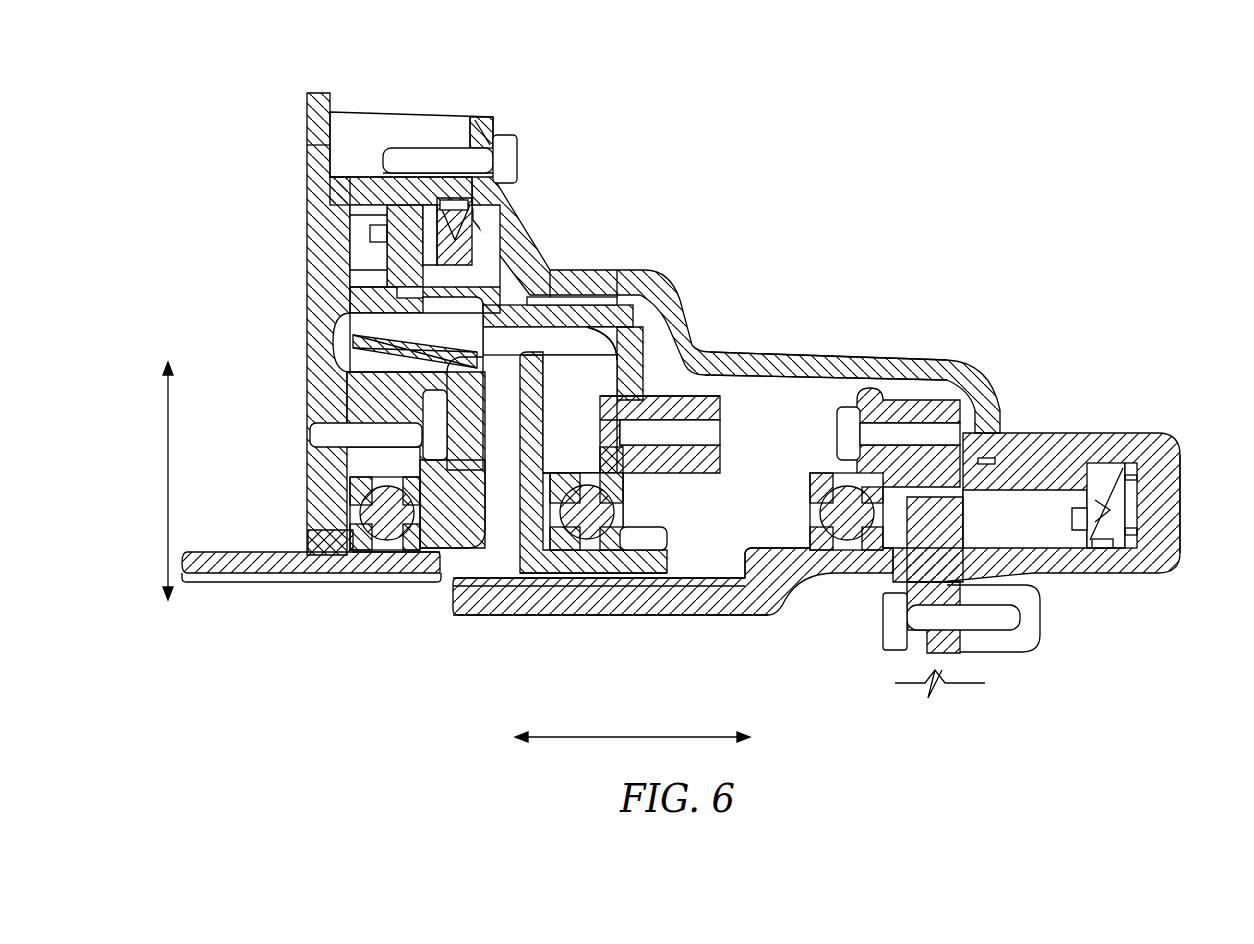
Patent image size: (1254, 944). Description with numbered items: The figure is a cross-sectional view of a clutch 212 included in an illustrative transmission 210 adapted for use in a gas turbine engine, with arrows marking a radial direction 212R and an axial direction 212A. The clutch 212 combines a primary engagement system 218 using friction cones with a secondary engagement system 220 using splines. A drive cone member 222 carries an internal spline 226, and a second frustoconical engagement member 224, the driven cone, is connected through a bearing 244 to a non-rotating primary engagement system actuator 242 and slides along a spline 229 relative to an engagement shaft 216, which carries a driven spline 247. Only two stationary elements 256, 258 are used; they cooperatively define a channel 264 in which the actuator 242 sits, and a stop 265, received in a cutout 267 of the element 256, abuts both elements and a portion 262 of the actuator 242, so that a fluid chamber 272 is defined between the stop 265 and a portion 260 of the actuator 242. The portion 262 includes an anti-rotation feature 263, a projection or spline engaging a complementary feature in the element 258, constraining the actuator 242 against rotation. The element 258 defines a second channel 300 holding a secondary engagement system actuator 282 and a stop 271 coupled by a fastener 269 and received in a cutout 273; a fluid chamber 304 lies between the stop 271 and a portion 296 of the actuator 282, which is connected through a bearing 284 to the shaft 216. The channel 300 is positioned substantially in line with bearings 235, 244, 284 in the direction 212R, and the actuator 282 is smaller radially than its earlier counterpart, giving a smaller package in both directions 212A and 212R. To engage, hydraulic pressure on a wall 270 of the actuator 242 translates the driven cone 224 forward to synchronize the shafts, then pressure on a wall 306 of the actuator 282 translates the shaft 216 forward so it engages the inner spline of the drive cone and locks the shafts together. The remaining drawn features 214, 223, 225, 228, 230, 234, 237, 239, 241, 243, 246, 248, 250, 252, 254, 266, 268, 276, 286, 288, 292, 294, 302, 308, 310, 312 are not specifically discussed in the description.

The transmission 210 is at (1080, 165).
The clutch 212 is at (998, 297).
The radial direction 212R is at (150, 462).
The axial direction 212A is at (605, 737).
The mounting plate 214 is at (371, 576).
The shaft 216 is at (722, 617).
The primary engagement system 218 is at (547, 355).
The secondary engagement system 220 is at (680, 538).
The drive cone member 222 is at (380, 393).
The spring 223 is at (385, 385).
The second frustoconical engagement member 224 is at (552, 452).
The hub shoulder 225 is at (522, 345).
The spline 226 is at (287, 584).
The hub flange 228 is at (684, 577).
The spline 229 is at (550, 582).
The cavity 230 is at (440, 307).
The support flange 234 is at (748, 575).
The bearing 235 is at (352, 492).
The bearing carrier 237 is at (420, 507).
The channel 239 is at (375, 435).
The ball 241 is at (390, 518).
The primary engagement system actuator 242 is at (650, 272).
The passage 243 is at (385, 447).
The bearing 244 is at (637, 490).
The inner ring 246 is at (682, 407).
The driven spline 247 is at (612, 617).
The ring surface 248 is at (643, 398).
The groove 250 is at (680, 437).
The hub wall 252 is at (547, 547).
The second bearing 254 is at (592, 520).
The stationary element 256 is at (325, 323).
The stationary element 258 is at (735, 352).
The portion of the actuator 260 is at (373, 252).
The portion of the actuator 262 is at (568, 297).
The anti-rotation feature 263 is at (612, 295).
The channel 264 is at (367, 183).
The stop 265 is at (458, 215).
The block 266 is at (352, 215).
The cutout 267 is at (497, 175).
The seat 268 is at (380, 280).
The fastener 269 is at (903, 635).
The wall 270 is at (465, 247).
The stop 271 is at (945, 512).
The fluid chamber 272 is at (433, 183).
The cutout 273 is at (1010, 585).
The wall 276 is at (380, 292).
The secondary engagement system actuator 282 is at (1010, 464).
The bearing 284 is at (880, 515).
The ring 286 is at (916, 398).
The spacer 288 is at (824, 470).
The bearing housing 292 is at (868, 545).
The groove 294 is at (806, 503).
The portion of the actuator 296 is at (1100, 510).
The channel 300 is at (1125, 462).
The pocket 302 is at (1075, 500).
The fluid chamber 304 is at (1047, 497).
The wall 306 is at (1127, 540).
The end wall 308 is at (1165, 453).
The plate 310 is at (1113, 462).
The pocket floor 312 is at (1117, 552).